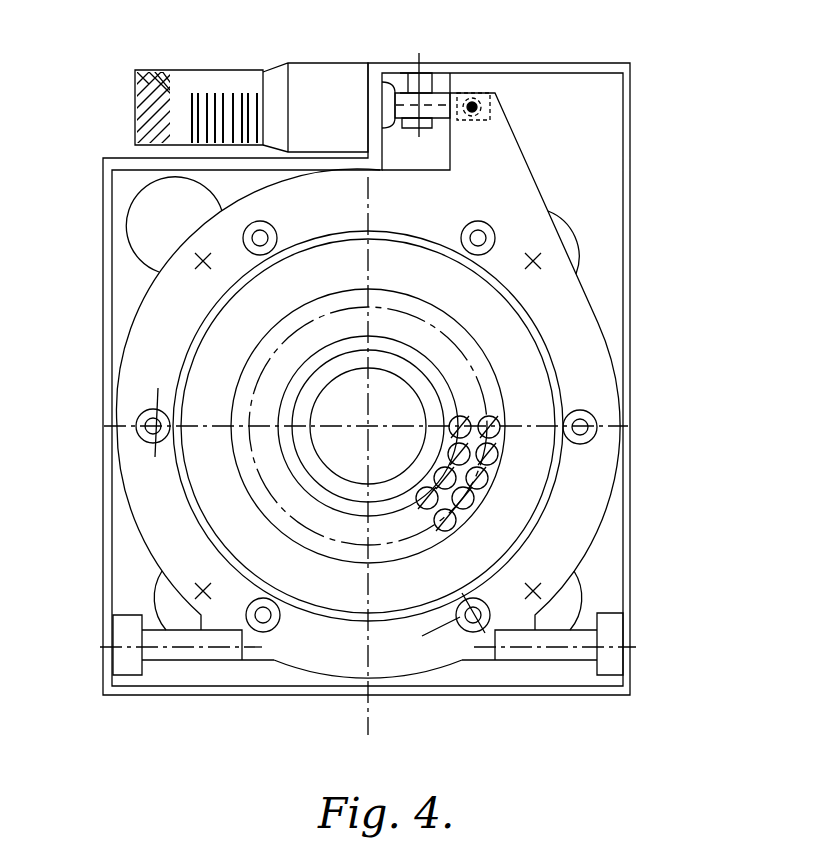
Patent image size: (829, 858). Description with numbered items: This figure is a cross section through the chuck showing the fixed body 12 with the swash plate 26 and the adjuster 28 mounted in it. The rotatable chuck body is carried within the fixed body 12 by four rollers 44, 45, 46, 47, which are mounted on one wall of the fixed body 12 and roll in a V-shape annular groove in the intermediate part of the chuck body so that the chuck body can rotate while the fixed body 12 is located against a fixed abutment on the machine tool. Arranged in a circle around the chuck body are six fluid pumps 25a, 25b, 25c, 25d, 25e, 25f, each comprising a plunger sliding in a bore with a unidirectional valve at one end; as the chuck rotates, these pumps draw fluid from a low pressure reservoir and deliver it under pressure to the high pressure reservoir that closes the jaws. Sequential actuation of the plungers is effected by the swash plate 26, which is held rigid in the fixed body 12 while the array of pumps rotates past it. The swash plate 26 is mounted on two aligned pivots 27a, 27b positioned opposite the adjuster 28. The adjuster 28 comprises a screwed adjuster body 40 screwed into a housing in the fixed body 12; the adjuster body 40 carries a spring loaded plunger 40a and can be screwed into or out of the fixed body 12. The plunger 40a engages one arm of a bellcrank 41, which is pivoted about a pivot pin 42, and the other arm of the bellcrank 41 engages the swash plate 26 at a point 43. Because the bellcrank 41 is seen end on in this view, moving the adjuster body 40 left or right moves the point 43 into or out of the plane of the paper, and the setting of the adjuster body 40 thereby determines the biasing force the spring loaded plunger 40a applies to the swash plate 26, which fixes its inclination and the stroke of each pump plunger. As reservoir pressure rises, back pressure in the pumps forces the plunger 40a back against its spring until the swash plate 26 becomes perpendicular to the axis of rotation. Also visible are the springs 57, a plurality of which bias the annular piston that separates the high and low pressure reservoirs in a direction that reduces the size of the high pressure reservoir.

The fixed body 12 is at (270, 690).
The swash plate 26 is at (510, 190).
The screwed adjuster body 40 is at (232, 80).
The adjuster 28 is at (320, 82).
The spring loaded plunger 40a is at (385, 110).
The pivot pin 42 is at (422, 80).
The bellcrank 41 is at (438, 100).
The point of engagement 43 is at (487, 97).
The roller 44 is at (183, 238).
The roller 45 is at (575, 245).
The roller 46 is at (565, 602).
The roller 47 is at (175, 612).
The fluid pump 25a is at (232, 258).
The fluid pump 25b is at (505, 258).
The fluid pump 25c is at (580, 458).
The fluid pump 25d is at (473, 615).
The fluid pump 25e is at (230, 593).
The fluid pump 25f is at (153, 422).
The springs 57 is at (487, 453).
The pivot 27a is at (153, 650).
The pivot 27b is at (555, 652).